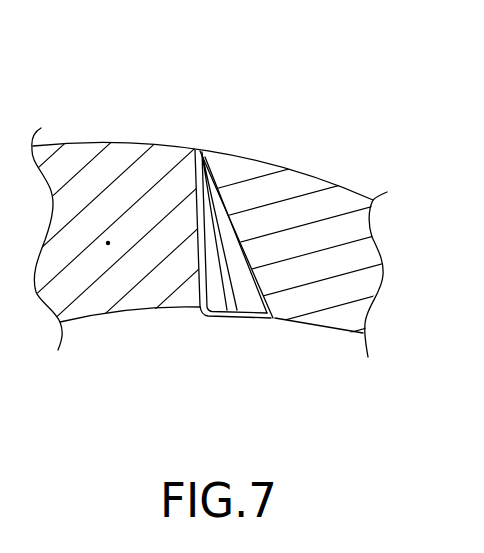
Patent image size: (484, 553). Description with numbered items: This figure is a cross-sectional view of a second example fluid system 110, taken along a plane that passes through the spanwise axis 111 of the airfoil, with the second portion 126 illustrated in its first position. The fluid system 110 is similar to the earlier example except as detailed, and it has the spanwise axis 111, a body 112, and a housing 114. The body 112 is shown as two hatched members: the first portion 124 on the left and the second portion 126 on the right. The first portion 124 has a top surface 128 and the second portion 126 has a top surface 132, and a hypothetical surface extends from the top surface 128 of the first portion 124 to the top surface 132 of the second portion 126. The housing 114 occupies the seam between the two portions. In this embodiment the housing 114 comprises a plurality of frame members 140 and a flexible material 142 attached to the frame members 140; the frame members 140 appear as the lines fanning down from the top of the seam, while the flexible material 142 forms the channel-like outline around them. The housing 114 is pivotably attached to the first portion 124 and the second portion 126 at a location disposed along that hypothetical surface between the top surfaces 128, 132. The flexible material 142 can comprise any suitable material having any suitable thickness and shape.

The fluid system 110 is at (326, 61).
The spanwise axis 111 is at (108, 243).
The body 112 is at (135, 71).
The housing 114 is at (227, 350).
The first portion 124 is at (97, 340).
The second portion 126 is at (370, 149).
The top surface of the first portion 128 is at (69, 146).
The top surface of the second portion 132 is at (294, 170).
The frame members 140 is at (214, 172).
The flexible material 142 is at (273, 318).